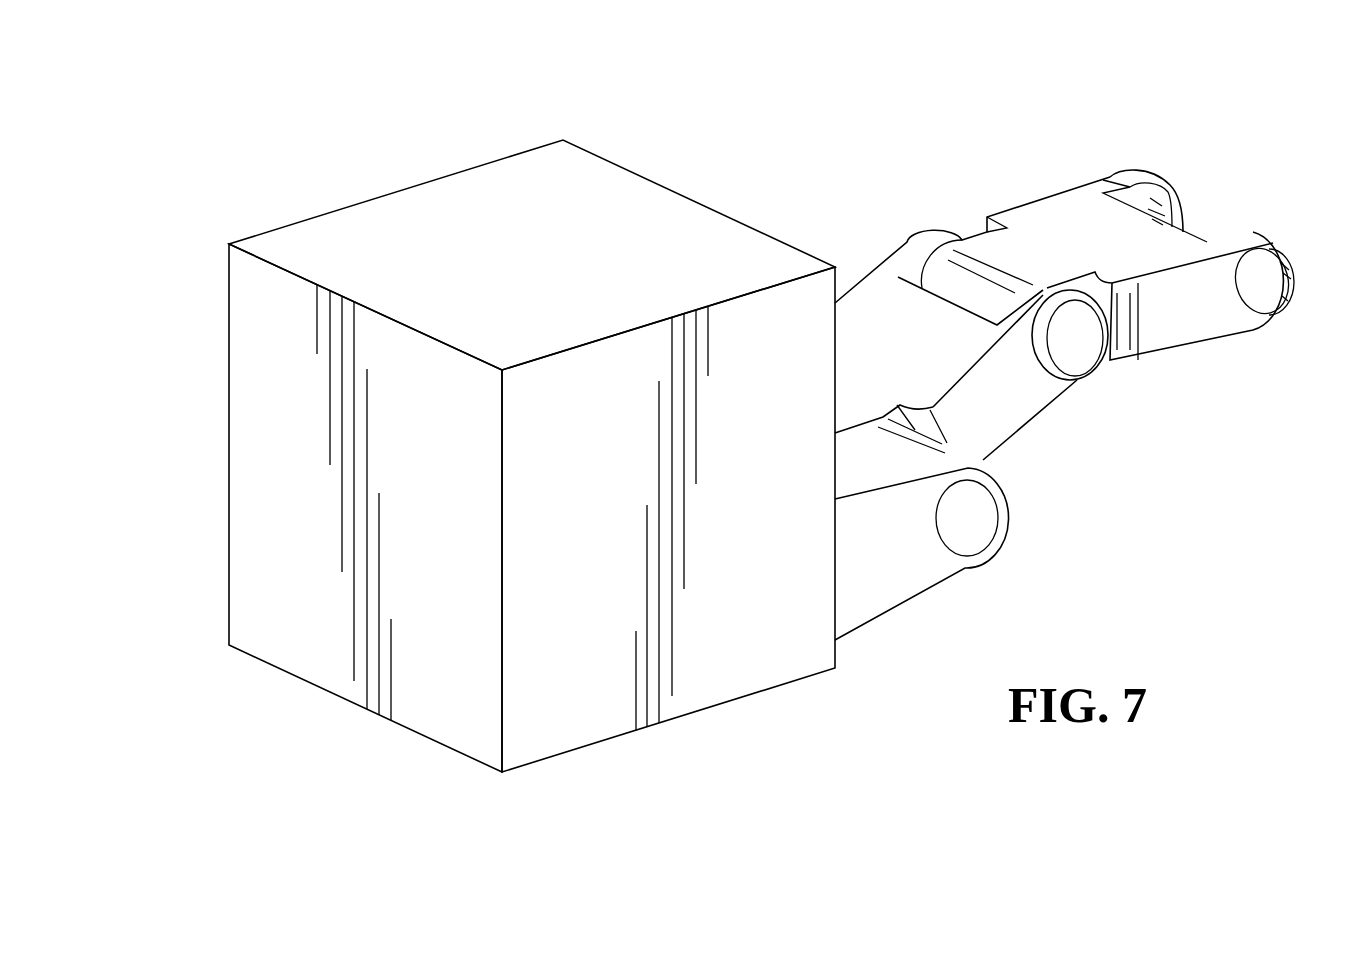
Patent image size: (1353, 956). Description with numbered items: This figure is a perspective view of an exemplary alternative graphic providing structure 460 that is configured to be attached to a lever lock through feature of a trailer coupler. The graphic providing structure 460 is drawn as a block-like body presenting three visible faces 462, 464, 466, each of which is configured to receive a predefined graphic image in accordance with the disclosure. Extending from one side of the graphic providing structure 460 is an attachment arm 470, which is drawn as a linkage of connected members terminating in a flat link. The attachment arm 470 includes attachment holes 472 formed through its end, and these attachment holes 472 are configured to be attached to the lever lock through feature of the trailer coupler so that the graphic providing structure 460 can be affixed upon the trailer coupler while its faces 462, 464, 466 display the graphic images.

The graphic providing structure 460 is at (347, 205).
The face 462 is at (712, 680).
The face 464 is at (260, 463).
The face 466 is at (632, 228).
The attachment arm 470 is at (1055, 225).
The attachment holes 472 is at (1170, 197).